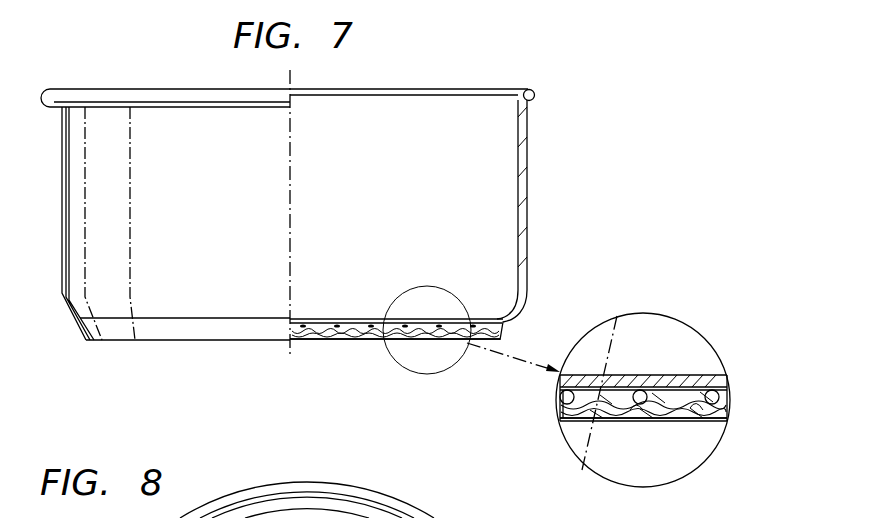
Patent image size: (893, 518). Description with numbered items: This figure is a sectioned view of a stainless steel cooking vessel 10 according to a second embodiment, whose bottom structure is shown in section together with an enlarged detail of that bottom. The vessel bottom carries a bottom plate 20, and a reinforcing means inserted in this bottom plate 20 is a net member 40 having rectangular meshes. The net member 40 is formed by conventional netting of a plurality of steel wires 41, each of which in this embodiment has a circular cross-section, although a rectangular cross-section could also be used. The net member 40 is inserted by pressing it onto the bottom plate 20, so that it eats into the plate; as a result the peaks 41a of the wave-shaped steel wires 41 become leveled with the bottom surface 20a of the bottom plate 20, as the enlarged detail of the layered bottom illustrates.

The cooking vessel body 10 is at (527, 170).
The bottom plate 20 is at (516, 325).
The bottom surface 20a is at (702, 420).
The net member 40 is at (341, 341).
The steel wires 41 is at (562, 423).
The peaks 41a is at (637, 422).